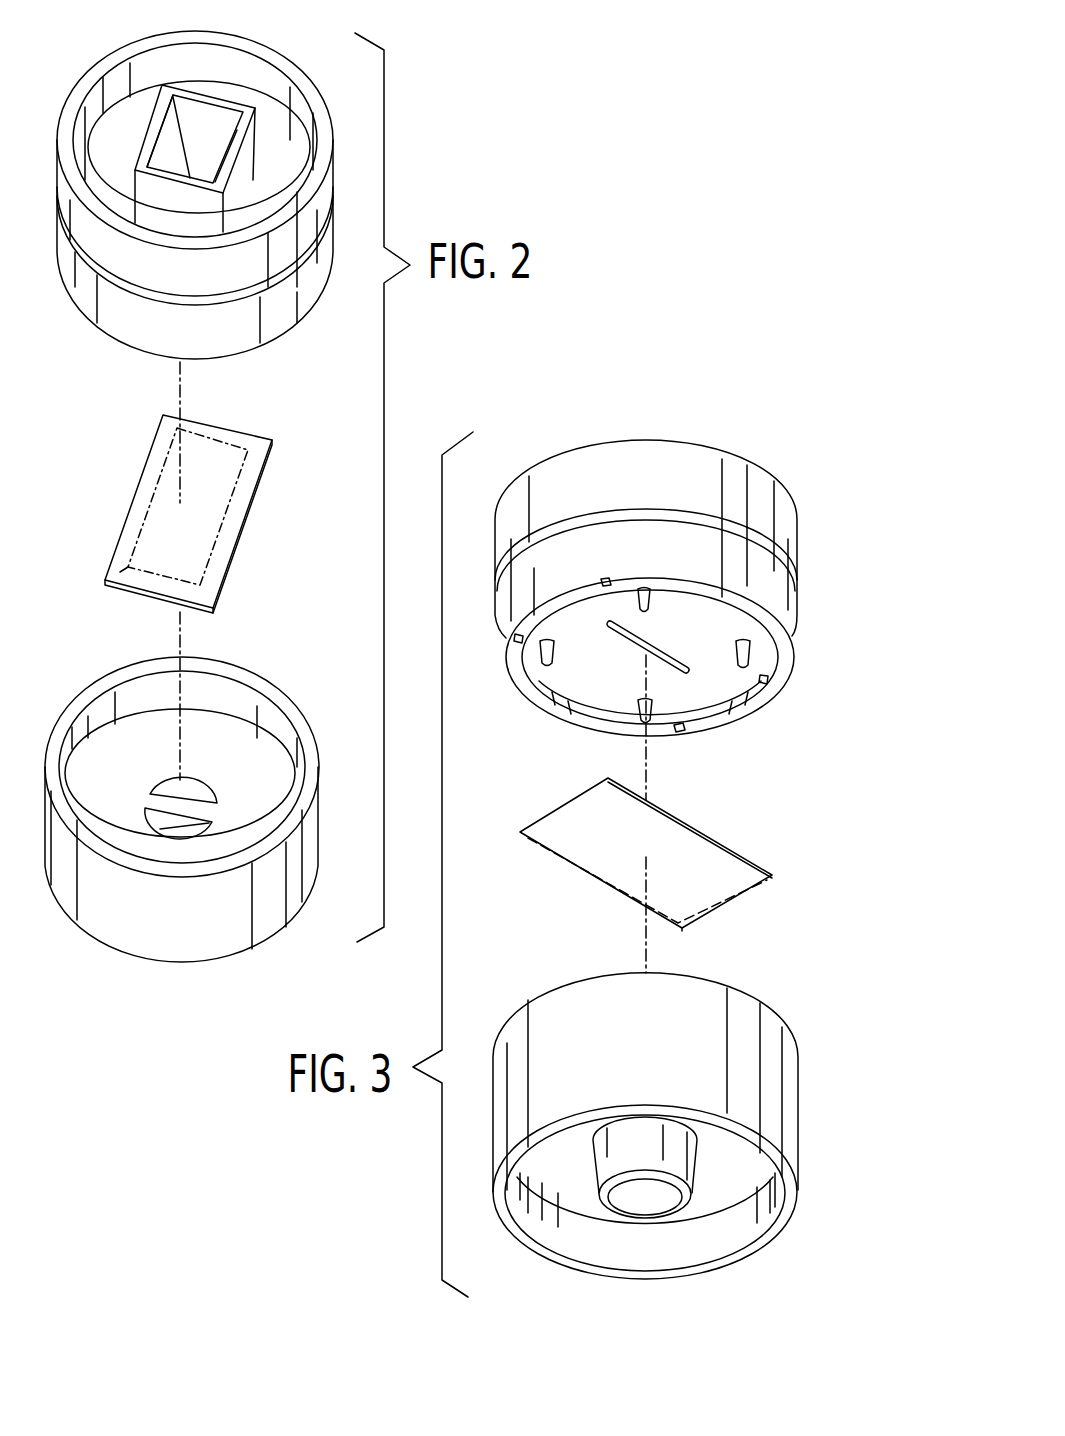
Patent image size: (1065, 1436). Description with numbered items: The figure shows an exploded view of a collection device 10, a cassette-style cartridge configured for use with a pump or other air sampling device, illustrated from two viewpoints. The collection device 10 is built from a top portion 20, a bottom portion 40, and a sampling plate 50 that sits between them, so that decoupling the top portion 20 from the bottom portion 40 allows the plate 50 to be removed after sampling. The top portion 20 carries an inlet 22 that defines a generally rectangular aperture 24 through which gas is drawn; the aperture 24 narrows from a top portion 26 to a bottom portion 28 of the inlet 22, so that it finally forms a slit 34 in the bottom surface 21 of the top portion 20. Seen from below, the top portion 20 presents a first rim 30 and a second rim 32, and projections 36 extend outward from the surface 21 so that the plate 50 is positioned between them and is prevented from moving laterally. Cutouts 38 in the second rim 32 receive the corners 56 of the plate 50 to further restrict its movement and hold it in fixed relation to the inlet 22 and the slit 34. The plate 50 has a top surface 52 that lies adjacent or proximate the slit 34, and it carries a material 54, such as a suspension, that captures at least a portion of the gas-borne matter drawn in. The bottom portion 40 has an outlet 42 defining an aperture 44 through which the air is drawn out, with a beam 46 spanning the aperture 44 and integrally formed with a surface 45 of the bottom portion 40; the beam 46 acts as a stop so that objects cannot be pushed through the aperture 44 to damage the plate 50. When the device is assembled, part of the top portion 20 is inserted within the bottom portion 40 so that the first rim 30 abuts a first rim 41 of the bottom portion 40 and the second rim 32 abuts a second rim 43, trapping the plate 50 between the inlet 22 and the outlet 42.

In FIG. 2, the collection device 10 is at (111, 983).
In FIG. 3, the collection device 10 is at (684, 405).
In FIG. 2, the top portion 20 is at (283, 255).
In FIG. 3, the top portion 20 is at (564, 492).
In FIG. 2, the surface 21 is at (117, 187).
In FIG. 2, the inlet 22 is at (293, 107).
In FIG. 2, the aperture 24 is at (208, 120).
In FIG. 2, the top portion of inlet 26 is at (153, 122).
In FIG. 2, the bottom portion of inlet 28 is at (248, 152).
In FIG. 3, the first rim 30 is at (788, 612).
In FIG. 3, the second rim 32 is at (593, 732).
In FIG. 3, the slit 34 is at (635, 645).
In FIG. 3, the projections 36 is at (539, 656).
In FIG. 3, the cutouts 38 is at (606, 580).
In FIG. 2, the bottom portion 40 is at (271, 904).
In FIG. 3, the bottom portion 40 is at (555, 1042).
In FIG. 2, the first rim 41 is at (246, 671).
In FIG. 3, the outlet 42 is at (608, 1158).
In FIG. 2, the second rim 43 is at (257, 740).
In FIG. 2, the aperture 44 is at (169, 786).
In FIG. 3, the aperture 44 is at (653, 1200).
In FIG. 2, the surface 45 is at (115, 794).
In FIG. 2, the beam 46 is at (207, 805).
In FIG. 2, the sampling plate 50 is at (260, 440).
In FIG. 3, the sampling plate 50 is at (660, 828).
In FIG. 2, the top surface 52 is at (125, 572).
In FIG. 2, the material 54 is at (197, 515).
In FIG. 2, the corners 56 is at (215, 608).
In FIG. 3, the corners 56 is at (737, 897).